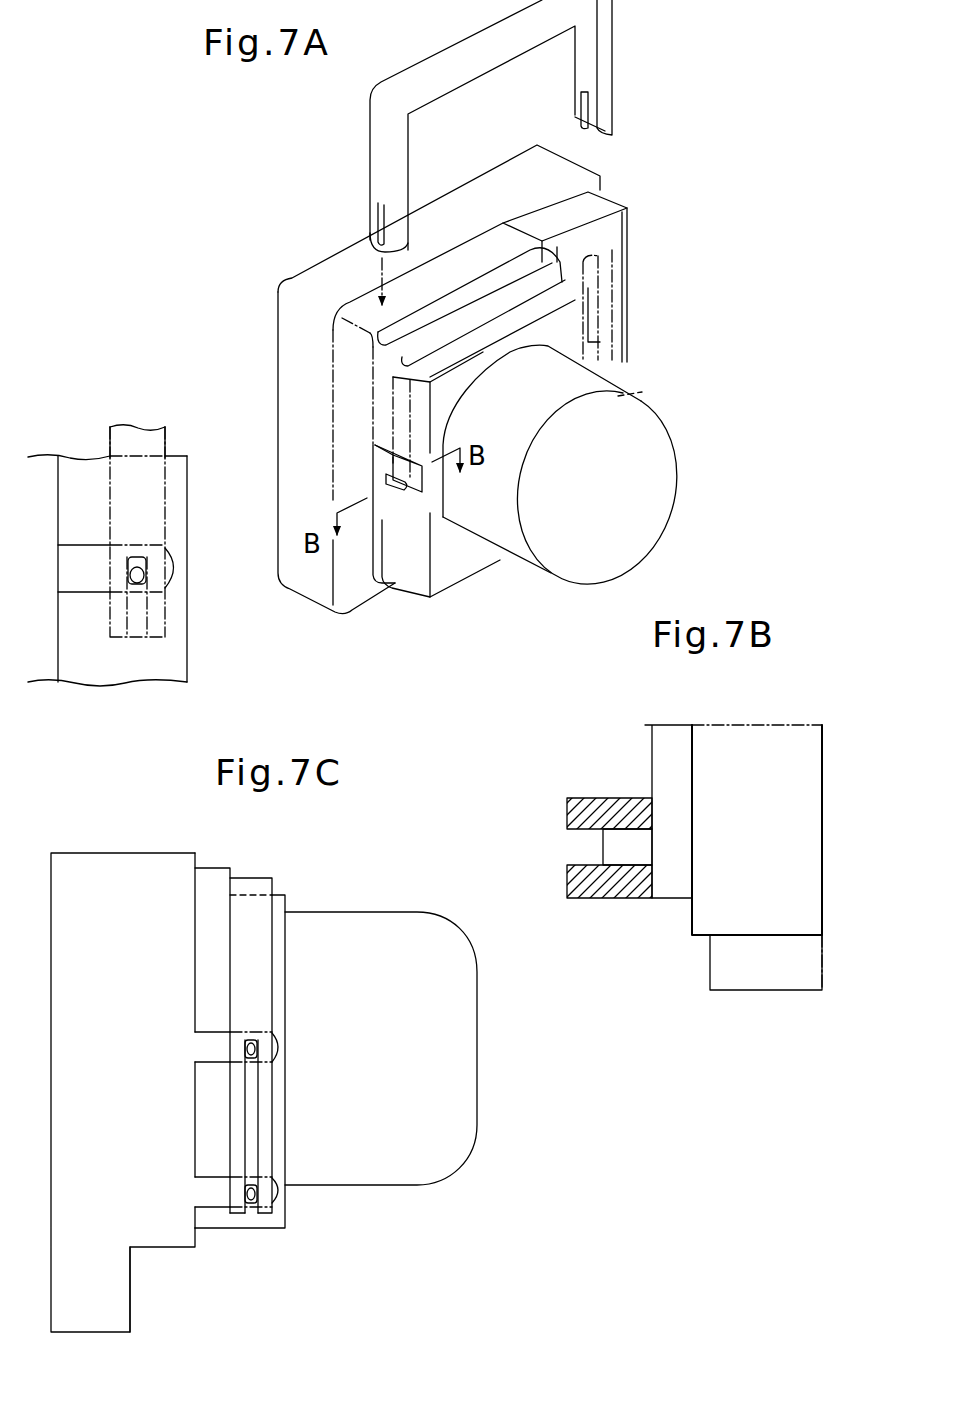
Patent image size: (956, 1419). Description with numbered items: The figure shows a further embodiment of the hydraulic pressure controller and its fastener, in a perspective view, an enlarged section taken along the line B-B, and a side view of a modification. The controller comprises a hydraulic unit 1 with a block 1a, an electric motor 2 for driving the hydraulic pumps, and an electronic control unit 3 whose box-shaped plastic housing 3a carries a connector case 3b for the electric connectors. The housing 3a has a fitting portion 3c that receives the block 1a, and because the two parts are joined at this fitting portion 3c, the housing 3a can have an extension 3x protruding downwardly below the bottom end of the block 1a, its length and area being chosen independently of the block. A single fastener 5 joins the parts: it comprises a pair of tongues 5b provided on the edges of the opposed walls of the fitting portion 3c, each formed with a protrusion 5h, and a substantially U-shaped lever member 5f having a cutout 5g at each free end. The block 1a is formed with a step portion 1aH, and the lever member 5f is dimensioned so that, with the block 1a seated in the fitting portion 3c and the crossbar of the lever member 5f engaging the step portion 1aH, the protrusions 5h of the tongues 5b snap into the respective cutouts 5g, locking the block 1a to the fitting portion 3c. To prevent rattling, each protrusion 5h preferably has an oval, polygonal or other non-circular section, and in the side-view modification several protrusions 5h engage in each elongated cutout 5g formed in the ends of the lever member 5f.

In FIG. 7A, the hydraulic unit 1 is at (588, 342).
In FIG. 7A, the block 1a is at (413, 575).
In FIG. 7B, the block 1a is at (810, 907).
In FIG. 7C, the block 1a is at (252, 1232).
In FIG. 7A, the step portion 1aH is at (503, 303).
In FIG. 7A, the electric motor 2 is at (675, 424).
In FIG. 7C, the electric motor 2 is at (360, 907).
In FIG. 7A, the electronic control unit 3 is at (627, 178).
In FIG. 7A, the housing 3a is at (297, 365).
In FIG. 7C, the housing 3a is at (100, 870).
In FIG. 7A, the connector case 3b is at (627, 240).
In FIG. 7A, the fitting portion 3c is at (350, 473).
In FIG. 7C, the fitting portion 3c is at (163, 992).
In FIG. 7A, the extension 3x is at (358, 590).
In FIG. 7C, the extension 3x is at (133, 1313).
In FIG. 7B, the fastener 5 is at (620, 792).
In FIG. 7A, the tongues 5b is at (430, 497).
In FIG. 7B, the tongues 5b is at (675, 877).
In FIG. 7C, the tongues 5b is at (280, 1043).
In FIG. 7A, the lever member 5f is at (378, 135).
In FIG. 7B, the lever member 5f is at (572, 887).
In FIG. 7C, the lever member 5f is at (250, 885).
In FIG. 7A, the cutout 5g is at (378, 222).
In FIG. 7C, the cutout 5g is at (253, 1118).
In FIG. 7A, the protrusion 5h is at (402, 487).
In FIG. 7B, the protrusion 5h is at (625, 852).
In FIG. 7C, the protrusion 5h is at (245, 1050).